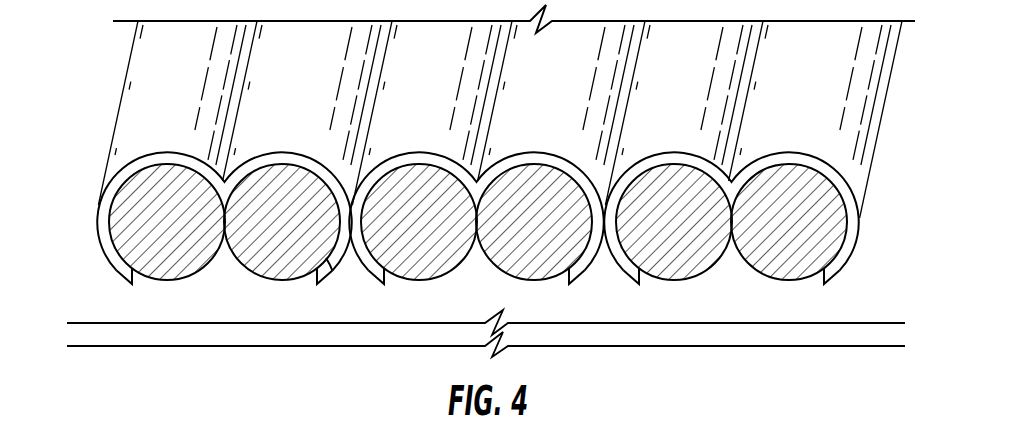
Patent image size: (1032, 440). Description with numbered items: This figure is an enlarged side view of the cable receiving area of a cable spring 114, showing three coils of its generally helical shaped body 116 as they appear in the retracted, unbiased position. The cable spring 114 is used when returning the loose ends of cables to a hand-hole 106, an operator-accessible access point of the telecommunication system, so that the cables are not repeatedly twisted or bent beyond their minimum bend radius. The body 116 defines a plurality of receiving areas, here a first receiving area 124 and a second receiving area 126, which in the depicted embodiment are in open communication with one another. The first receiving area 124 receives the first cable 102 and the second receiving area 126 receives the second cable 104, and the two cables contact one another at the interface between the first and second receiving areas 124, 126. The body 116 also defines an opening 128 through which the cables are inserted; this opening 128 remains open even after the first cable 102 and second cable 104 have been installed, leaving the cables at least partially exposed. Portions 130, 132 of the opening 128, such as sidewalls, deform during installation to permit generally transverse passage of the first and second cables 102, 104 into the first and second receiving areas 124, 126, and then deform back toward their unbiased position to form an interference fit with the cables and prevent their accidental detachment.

The first cable 102 is at (184, 237).
The second cable 104 is at (299, 237).
The hand-hole 106 is at (720, 347).
The cable spring 114 is at (145, 58).
The body 116 is at (122, 100).
The first receiving area 124 is at (120, 183).
The second receiving area 126 is at (333, 266).
The opening 128 is at (218, 285).
The portion of the opening 130 is at (127, 275).
The portion of the opening 132 is at (317, 284).